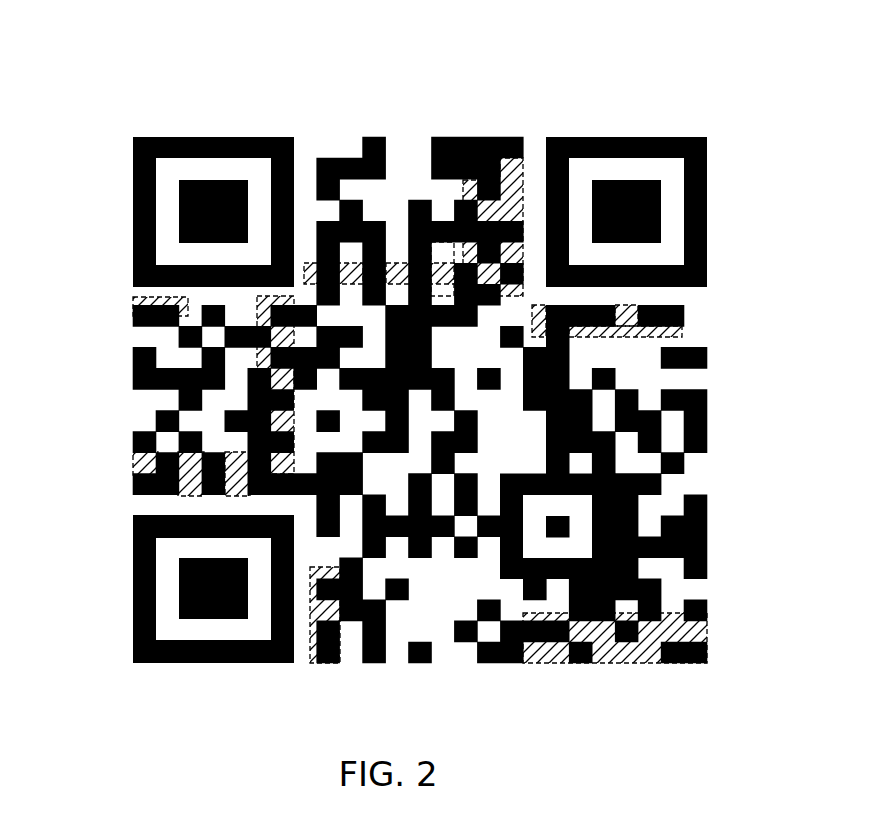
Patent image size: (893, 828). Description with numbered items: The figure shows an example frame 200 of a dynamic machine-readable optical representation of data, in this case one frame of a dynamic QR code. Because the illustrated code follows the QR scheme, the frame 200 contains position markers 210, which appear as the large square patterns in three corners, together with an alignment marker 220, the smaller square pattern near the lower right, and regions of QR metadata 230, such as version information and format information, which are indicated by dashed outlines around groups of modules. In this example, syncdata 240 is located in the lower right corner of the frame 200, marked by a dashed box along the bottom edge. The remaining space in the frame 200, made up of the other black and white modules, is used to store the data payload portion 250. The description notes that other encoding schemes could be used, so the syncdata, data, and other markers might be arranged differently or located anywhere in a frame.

The frame 200 is at (104, 50).
The position markers 210 is at (214, 181).
The alignment marker 220 is at (533, 548).
The QR metadata 230 is at (338, 212).
The syncdata 240 is at (641, 657).
The data payload portion 250 is at (615, 373).